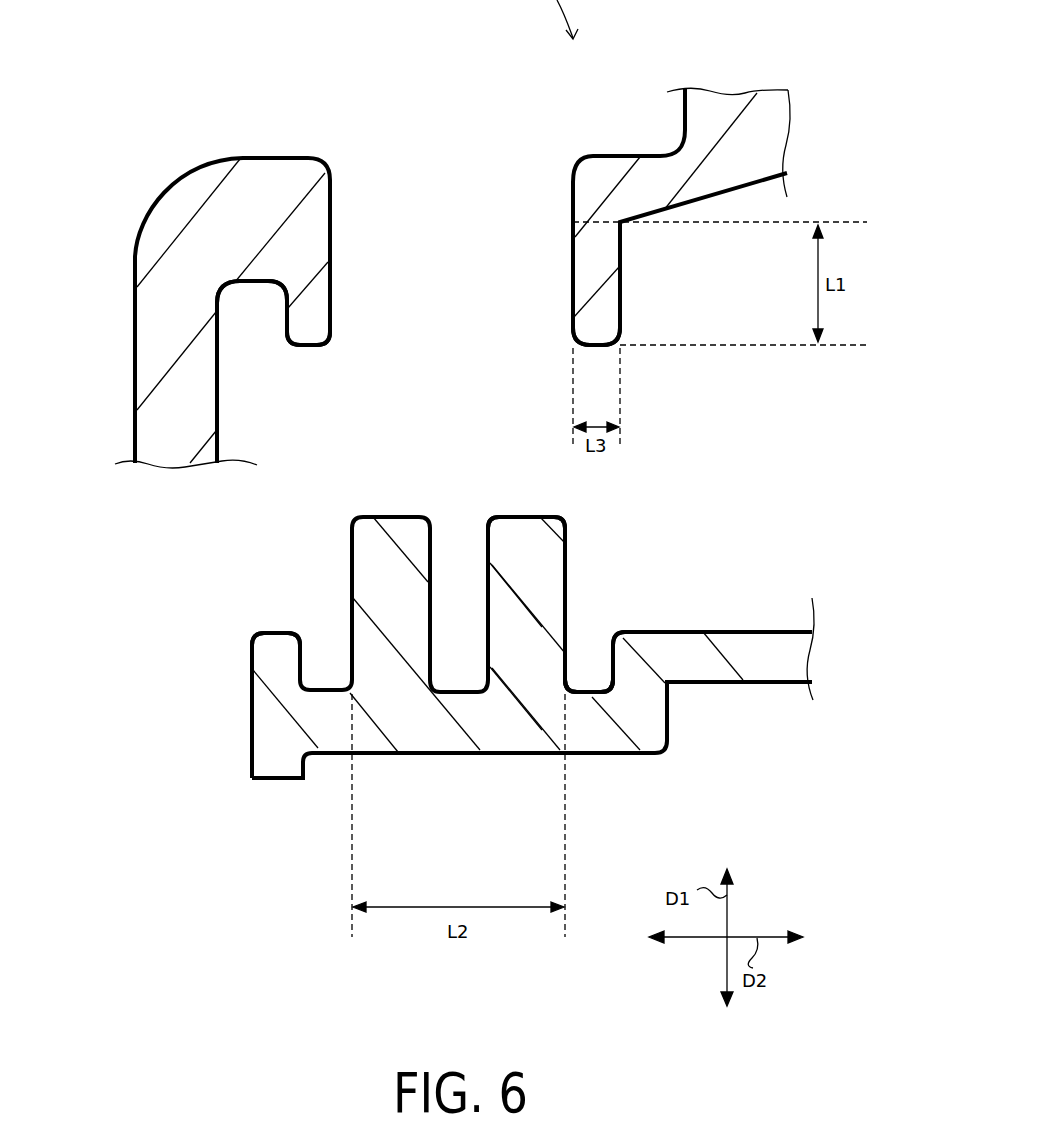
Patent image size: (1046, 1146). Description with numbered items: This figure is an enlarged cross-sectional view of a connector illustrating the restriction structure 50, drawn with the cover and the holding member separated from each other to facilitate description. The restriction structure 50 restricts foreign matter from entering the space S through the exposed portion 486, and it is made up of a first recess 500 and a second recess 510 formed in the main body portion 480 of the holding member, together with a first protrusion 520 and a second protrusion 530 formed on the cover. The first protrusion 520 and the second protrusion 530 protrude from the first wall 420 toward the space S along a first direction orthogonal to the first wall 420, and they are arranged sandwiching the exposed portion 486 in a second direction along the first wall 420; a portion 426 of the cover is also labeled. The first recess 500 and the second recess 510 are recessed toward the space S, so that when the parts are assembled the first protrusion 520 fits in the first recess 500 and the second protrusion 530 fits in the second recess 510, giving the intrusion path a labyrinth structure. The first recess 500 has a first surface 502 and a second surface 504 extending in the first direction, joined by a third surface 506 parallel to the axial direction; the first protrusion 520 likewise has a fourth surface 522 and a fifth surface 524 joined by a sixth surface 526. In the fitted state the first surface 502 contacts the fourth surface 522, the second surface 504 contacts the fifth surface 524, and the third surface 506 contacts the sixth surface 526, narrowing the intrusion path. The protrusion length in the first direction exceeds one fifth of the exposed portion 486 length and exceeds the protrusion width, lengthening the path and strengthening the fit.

The restriction structure 50 is at (437, 95).
The first wall 420 is at (295, 187).
The wall portion 426 is at (173, 395).
The second protrusion 530 is at (307, 323).
The first protrusion 520 is at (590, 257).
The fourth surface 522 is at (573, 296).
The fifth surface 524 is at (620, 282).
The sixth surface 526 is at (595, 350).
The main body portion 480 is at (457, 735).
The exposed portion 486 is at (500, 515).
The first recess 500 is at (595, 697).
The first surface 502 is at (567, 575).
The second surface 504 is at (600, 663).
The third surface 506 is at (587, 690).
The second recess 510 is at (323, 693).